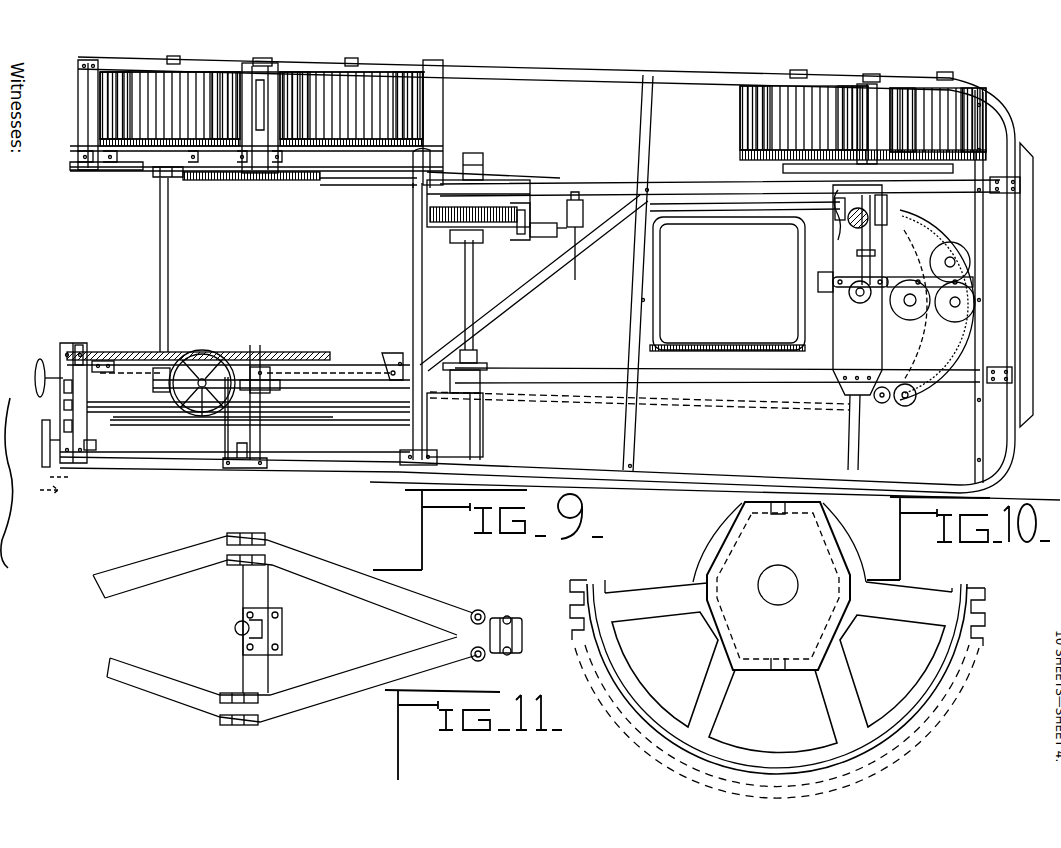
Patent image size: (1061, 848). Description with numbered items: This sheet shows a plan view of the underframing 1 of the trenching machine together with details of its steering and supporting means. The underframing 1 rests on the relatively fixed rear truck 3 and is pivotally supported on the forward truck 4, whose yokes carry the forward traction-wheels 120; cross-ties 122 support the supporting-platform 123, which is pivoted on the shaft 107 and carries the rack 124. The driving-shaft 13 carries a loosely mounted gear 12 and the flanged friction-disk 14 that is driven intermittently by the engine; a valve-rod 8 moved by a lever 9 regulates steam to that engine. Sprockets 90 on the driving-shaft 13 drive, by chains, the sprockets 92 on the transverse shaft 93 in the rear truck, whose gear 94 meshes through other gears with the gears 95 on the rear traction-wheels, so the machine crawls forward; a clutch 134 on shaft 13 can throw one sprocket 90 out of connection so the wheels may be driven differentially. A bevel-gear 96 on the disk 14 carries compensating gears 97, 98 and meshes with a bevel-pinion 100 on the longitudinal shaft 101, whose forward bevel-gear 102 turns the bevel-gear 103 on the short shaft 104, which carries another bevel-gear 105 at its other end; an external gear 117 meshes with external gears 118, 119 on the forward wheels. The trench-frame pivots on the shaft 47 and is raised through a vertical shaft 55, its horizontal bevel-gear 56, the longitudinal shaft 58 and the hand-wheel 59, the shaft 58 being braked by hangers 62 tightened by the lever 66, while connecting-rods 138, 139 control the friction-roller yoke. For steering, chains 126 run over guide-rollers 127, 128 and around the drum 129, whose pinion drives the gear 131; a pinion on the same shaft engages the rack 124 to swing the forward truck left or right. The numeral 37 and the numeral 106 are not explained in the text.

In FIG. 9, the underframing 1 is at (660, 175).
In FIG. 9, the rear truck 3 is at (268, 63).
In FIG. 9, the forward truck 4 is at (880, 80).
In FIG. 9, the valve-rod 8 is at (448, 396).
In FIG. 9, the lever 9 is at (62, 490).
In FIG. 9, the gear 12 is at (420, 221).
In FIG. 9, the driving-shaft 13 is at (465, 293).
In FIG. 9, the friction-disk 14 is at (528, 205).
In FIG. 9, the lever 37 is at (68, 410).
In FIG. 9, the shaft 47 is at (172, 298).
In FIG. 9, the vertical shaft 55 is at (182, 418).
In FIG. 9, the bevel-gear 56 is at (210, 357).
In FIG. 9, the longitudinally-extended shaft 58 is at (130, 355).
In FIG. 9, the hand-wheel 59 is at (33, 378).
In FIG. 9, the hangers 62 is at (65, 400).
In FIG. 9, the lever 66 is at (80, 350).
In FIG. 9, the sprockets 90 is at (447, 165).
In FIG. 9, the sprockets 92 is at (322, 186).
In FIG. 9, the transverse shaft 93 is at (258, 78).
In FIG. 9, the gear 94 is at (262, 181).
In FIG. 9, the gears 95 is at (165, 139).
In FIG. 9, the bevel-gear 96 is at (505, 178).
In FIG. 9, the compensating gear 97 is at (425, 172).
In FIG. 9, the compensating gear 98 is at (498, 180).
In FIG. 9, the bevel-pinion 100 is at (522, 186).
In FIG. 9, the shaft 101 is at (562, 190).
In FIG. 9, the bevel-gear 102 is at (852, 210).
In FIG. 9, the bevel-gear 103 is at (895, 218).
In FIG. 9, the short shaft 104 is at (873, 243).
In FIG. 9, the bevel-gear 105 is at (812, 262).
In FIG. 9, the bevel gear 106 is at (860, 302).
In FIG. 9, the shaft 107 is at (835, 292).
In FIG. 9, the external gear 117 is at (815, 172).
In FIG. 9, the external gear 118 is at (790, 152).
In FIG. 9, the external gear 119 is at (940, 153).
In FIG. 9, the forward traction-wheels 120 is at (763, 72).
In FIG. 11, the cross-ties 122 is at (366, 672).
In FIG. 10, the supporting-platform 123 is at (779, 586).
In FIG. 9, the rack 124 is at (915, 340).
In FIG. 10, the rack 124 is at (975, 645).
In FIG. 9, the chains 126 is at (102, 420).
In FIG. 9, the guide-roller 127 is at (912, 402).
In FIG. 9, the guide-roller 128 is at (885, 406).
In FIG. 9, the wheel or drum 129 is at (983, 318).
In FIG. 9, the gear 131 is at (982, 275).
In FIG. 9, the clutch 134 is at (478, 355).
In FIG. 9, the connecting-rod 138 is at (326, 412).
In FIG. 9, the connecting-rod 139 is at (393, 358).